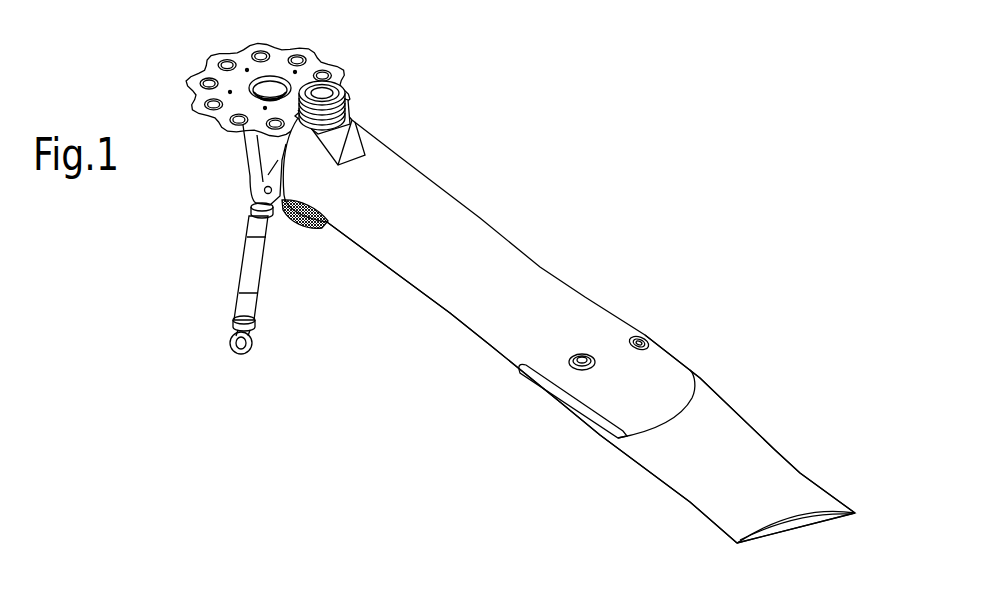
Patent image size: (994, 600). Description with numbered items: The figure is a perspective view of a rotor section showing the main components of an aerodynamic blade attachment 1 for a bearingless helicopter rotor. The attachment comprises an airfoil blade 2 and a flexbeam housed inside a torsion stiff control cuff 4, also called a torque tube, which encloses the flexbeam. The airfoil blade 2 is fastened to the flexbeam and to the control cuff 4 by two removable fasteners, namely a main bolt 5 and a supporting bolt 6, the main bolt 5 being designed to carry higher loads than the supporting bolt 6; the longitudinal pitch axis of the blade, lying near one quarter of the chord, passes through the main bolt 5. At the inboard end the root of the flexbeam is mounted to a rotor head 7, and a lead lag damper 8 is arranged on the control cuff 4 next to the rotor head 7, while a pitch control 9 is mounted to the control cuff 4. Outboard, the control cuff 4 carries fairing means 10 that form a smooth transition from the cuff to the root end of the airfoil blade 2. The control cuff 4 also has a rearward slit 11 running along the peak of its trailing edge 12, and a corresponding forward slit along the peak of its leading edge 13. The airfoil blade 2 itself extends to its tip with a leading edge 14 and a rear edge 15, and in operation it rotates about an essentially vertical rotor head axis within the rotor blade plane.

The aerodynamic blade attachment 1 is at (612, 198).
The airfoil blade 2 is at (740, 487).
The control cuff 4 is at (522, 250).
The main bolt 5 is at (641, 336).
The supporting bolt 6 is at (582, 356).
The rotor head 7 is at (240, 55).
The lead lag damper 8 is at (346, 82).
The pitch control 9 is at (250, 252).
The fairing means 10 is at (674, 388).
The rearward slit 11 is at (529, 378).
The trailing edge 12 is at (418, 288).
The leading edge 13 is at (476, 219).
The leading edge 14 is at (770, 444).
The rear edge 15 is at (630, 457).